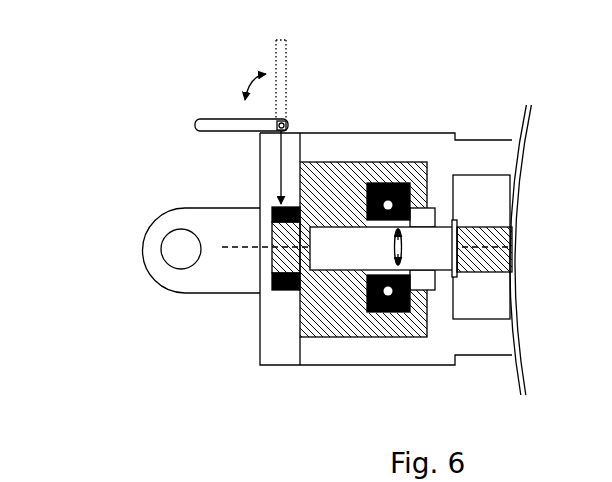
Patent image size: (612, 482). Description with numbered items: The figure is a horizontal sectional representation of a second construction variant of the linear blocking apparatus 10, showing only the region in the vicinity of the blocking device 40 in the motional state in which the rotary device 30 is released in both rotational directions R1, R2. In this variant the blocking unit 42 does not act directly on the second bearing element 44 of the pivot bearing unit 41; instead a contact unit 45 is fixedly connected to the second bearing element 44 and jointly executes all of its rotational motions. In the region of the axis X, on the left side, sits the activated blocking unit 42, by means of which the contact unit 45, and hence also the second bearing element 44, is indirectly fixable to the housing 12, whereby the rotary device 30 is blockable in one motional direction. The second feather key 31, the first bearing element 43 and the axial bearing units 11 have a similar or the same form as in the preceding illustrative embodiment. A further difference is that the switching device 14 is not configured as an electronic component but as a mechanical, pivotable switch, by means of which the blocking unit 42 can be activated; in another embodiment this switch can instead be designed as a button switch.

The linear blocking apparatus 10 is at (437, 65).
The axial bearing units 11 is at (357, 268).
The housing 12 is at (487, 168).
The switching device 14 is at (231, 127).
The rotary device 30 is at (477, 280).
The second feather key 31 is at (385, 223).
The blocking device 40 is at (375, 227).
The pivot bearing unit 41 is at (435, 183).
The blocking unit 42 is at (277, 203).
The first bearing element 43 is at (357, 197).
The second bearing element 44 is at (404, 195).
The contact unit 45 is at (372, 162).
The axis X is at (367, 235).
The first rotational direction R1 is at (414, 260).
The second rotational direction R2 is at (413, 247).